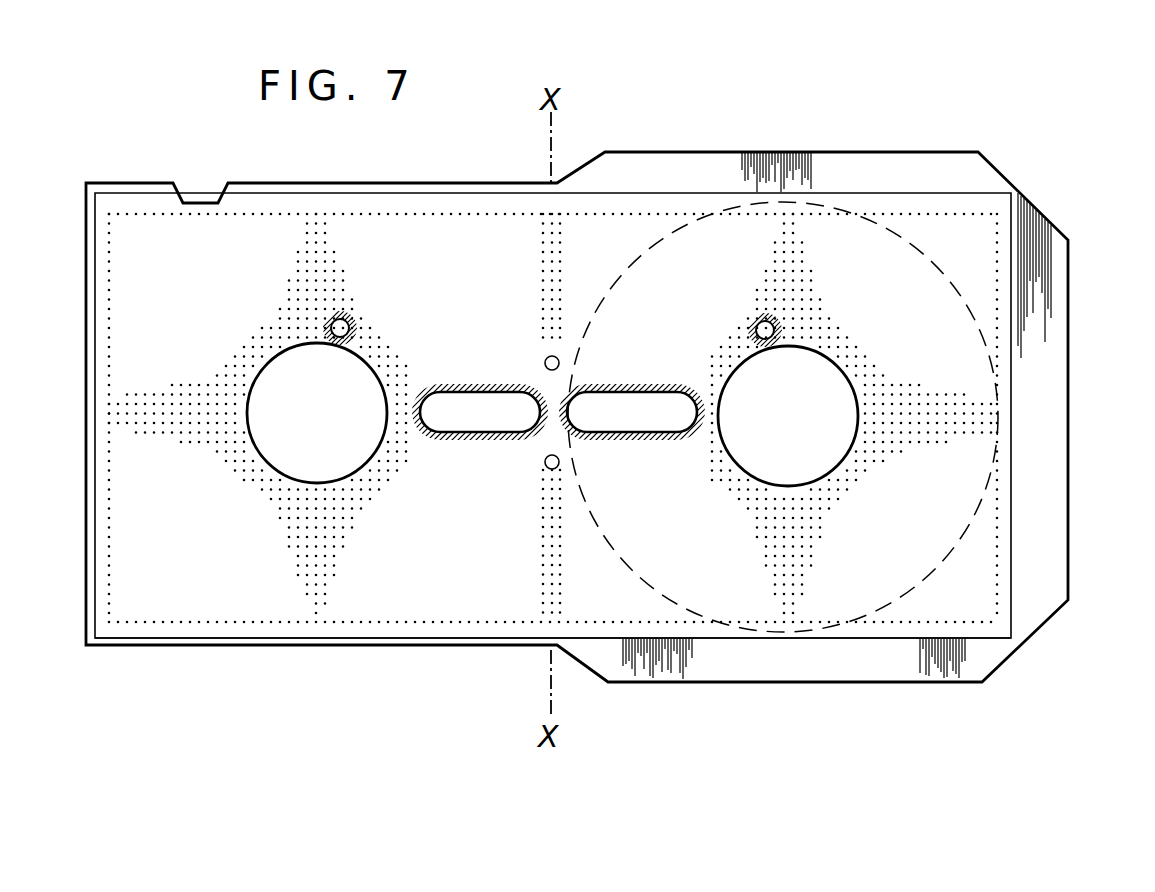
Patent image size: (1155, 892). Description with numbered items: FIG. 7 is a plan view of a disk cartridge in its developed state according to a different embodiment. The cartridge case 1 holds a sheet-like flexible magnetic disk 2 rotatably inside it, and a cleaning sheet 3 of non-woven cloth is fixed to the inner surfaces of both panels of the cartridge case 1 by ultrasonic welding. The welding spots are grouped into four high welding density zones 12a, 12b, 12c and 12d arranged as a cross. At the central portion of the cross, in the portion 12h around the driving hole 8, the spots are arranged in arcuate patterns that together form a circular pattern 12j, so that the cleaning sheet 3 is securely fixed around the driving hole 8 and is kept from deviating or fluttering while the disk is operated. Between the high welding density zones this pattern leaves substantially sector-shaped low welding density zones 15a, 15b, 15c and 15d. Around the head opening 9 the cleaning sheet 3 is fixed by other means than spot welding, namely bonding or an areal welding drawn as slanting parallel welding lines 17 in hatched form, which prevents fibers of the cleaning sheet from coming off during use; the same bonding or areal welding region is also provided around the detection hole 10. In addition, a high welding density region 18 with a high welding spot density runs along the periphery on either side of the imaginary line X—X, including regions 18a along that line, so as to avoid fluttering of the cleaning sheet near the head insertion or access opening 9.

The cartridge case 1 is at (1042, 214).
The magnetic disk 2 is at (678, 232).
The cleaning sheet 3 is at (437, 640).
The driving hole 8 is at (260, 380).
The head opening 9 is at (468, 432).
The detection hole 10 is at (764, 320).
The high welding density zone 12a is at (943, 433).
The high welding density zone 12b is at (805, 275).
The high welding density zone 12c is at (714, 440).
The high welding density zone 12d is at (793, 593).
The portion around the driving hole 12h is at (255, 458).
The circular pattern 12j is at (243, 433).
The low welding density zone 15a is at (923, 290).
The low welding density zone 15b is at (713, 257).
The low welding density zone 15c is at (703, 560).
The low welding density zone 15d is at (902, 532).
The slanting parallel welding lines 17 is at (350, 322).
The high welding density region 18 is at (460, 205).
The regions along the line X—X 18a is at (545, 262).